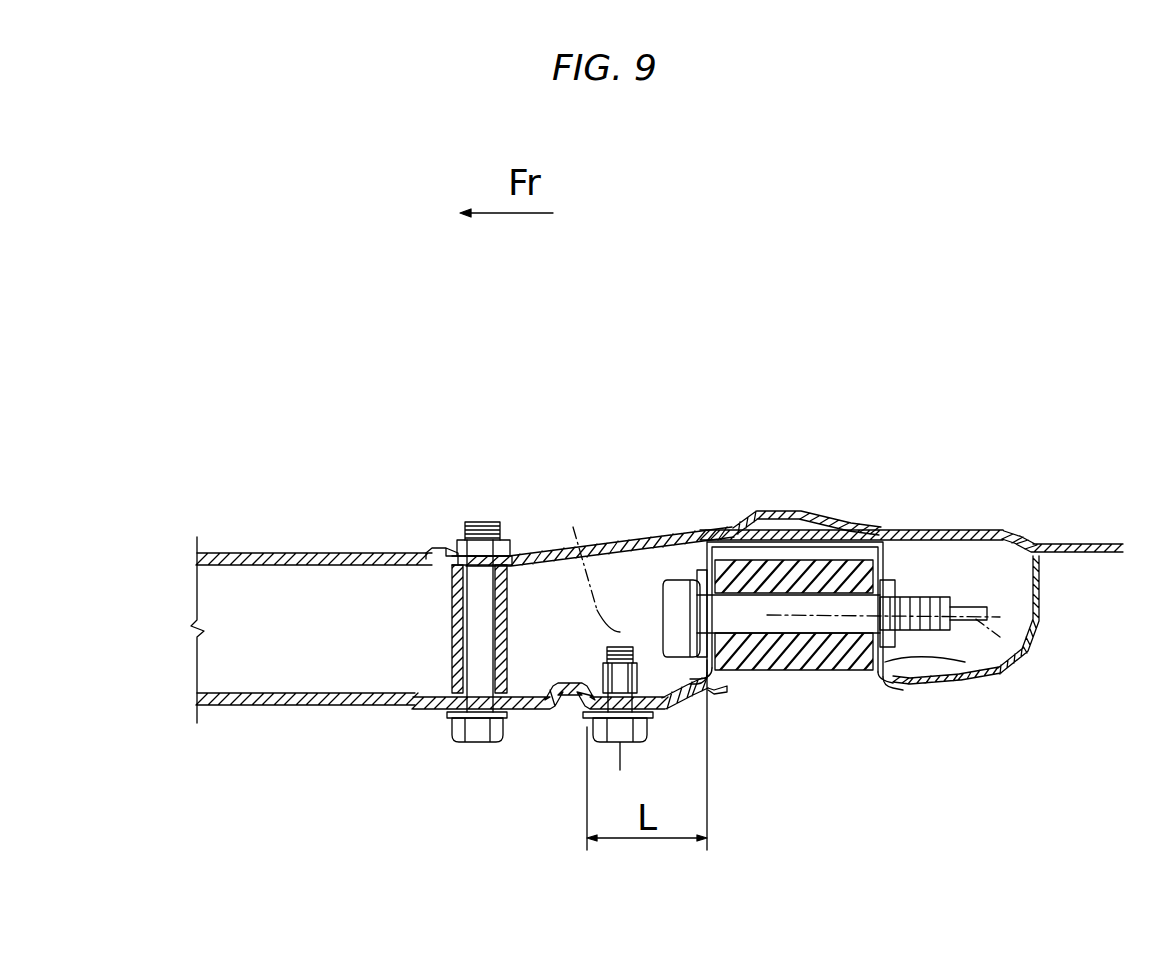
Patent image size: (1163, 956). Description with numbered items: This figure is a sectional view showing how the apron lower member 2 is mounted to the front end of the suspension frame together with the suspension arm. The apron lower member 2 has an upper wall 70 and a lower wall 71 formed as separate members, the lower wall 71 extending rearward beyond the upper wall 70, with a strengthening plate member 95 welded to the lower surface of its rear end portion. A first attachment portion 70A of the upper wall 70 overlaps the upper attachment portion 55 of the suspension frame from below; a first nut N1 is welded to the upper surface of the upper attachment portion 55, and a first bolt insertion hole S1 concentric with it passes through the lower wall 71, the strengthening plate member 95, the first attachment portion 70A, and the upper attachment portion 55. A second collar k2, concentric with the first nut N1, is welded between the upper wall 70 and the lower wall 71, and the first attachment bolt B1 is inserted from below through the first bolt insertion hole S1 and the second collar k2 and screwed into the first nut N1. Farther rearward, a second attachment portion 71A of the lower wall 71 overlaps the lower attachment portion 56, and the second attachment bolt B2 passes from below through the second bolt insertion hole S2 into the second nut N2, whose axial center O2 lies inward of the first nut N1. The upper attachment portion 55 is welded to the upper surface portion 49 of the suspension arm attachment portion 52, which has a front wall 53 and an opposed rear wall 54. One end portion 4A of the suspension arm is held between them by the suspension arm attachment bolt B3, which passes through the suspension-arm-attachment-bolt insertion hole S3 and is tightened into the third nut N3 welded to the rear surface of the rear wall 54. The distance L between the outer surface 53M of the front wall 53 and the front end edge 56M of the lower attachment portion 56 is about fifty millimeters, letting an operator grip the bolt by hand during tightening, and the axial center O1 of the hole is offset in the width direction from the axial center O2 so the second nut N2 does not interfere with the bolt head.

The upper wall 70 is at (225, 548).
The first attachment portion 70A is at (420, 582).
The lower wall 71 is at (225, 705).
The apron lower member 2 is at (218, 780).
The upper attachment portion 55 is at (640, 525).
The first nut N1 is at (460, 540).
The first bolt insertion hole S1 is at (520, 540).
The second collar k2 is at (450, 650).
The first attachment bolt B1 is at (478, 743).
The lower attachment portion 56 is at (673, 692).
The end edge 56M is at (527, 710).
The strengthening plate member 95 is at (567, 710).
The second attachment portion 71A is at (737, 718).
The second bolt insertion hole S2 is at (627, 647).
The second nut N2 is at (597, 673).
The second attachment bolt B2 is at (640, 742).
The axial center of second nut O2 is at (581, 554).
The outer surface of front wall 53M is at (676, 540).
The front wall 53 is at (760, 672).
The suspension arm attachment bolt B3 is at (953, 607).
The suspension-arm-attachment-bolt insertion hole S3 is at (718, 585).
The third nut N3 is at (910, 587).
The suspension arm attachment portion 52 is at (883, 503).
The upper surface portion 49 is at (797, 515).
The one end portion of suspension arm 4A is at (847, 525).
The rear wall 54 is at (983, 677).
The axial center O1 is at (1000, 637).